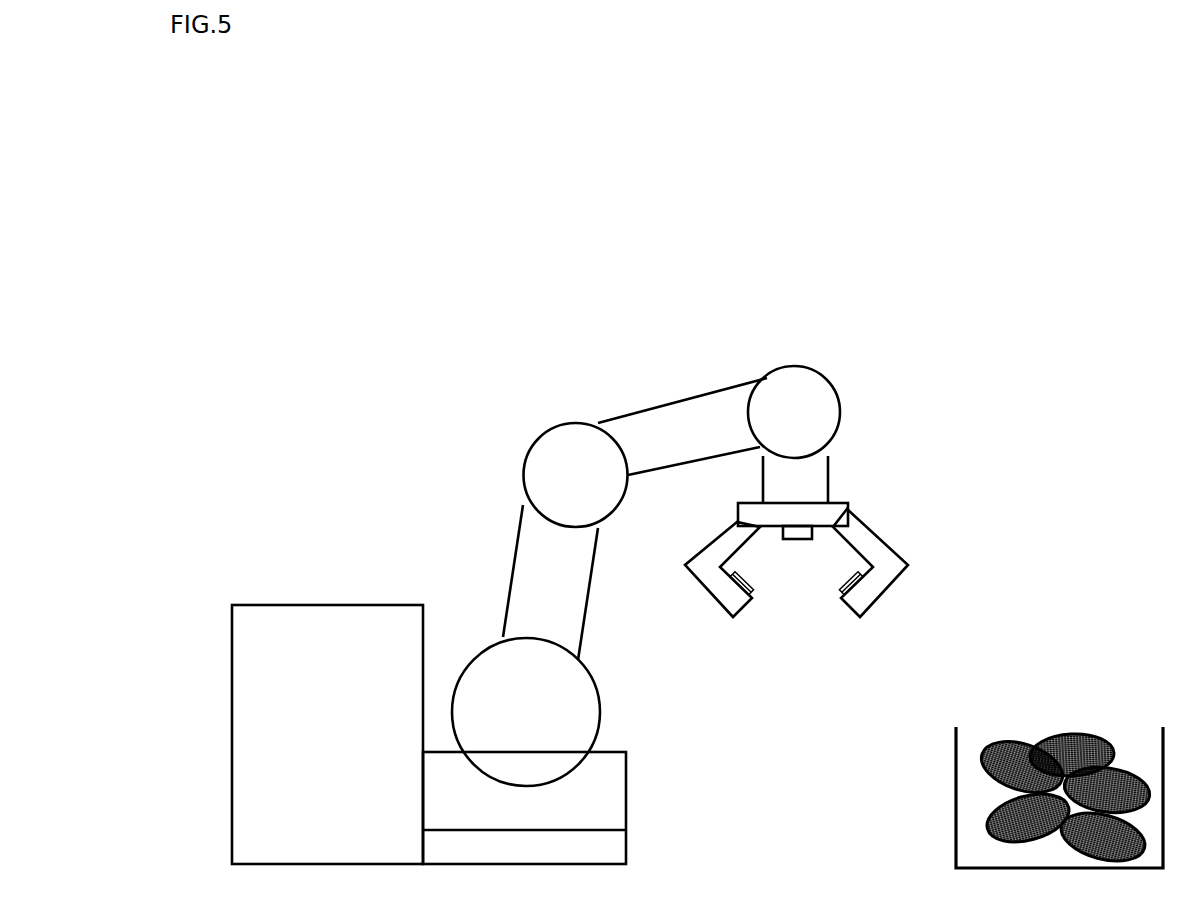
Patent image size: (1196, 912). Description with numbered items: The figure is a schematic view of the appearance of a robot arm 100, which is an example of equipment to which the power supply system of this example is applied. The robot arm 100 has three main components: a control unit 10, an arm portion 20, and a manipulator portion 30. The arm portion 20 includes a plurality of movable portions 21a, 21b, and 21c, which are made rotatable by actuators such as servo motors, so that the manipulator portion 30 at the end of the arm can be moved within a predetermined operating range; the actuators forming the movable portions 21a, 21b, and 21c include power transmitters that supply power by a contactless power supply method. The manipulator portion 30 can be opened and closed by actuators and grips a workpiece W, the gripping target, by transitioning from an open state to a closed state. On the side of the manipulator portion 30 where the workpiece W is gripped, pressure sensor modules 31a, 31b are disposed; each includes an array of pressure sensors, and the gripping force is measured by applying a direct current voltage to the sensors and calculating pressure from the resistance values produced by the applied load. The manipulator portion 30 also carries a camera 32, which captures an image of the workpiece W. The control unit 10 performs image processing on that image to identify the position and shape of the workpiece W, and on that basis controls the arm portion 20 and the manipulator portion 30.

The robot arm 100 is at (303, 160).
The control unit 10 is at (297, 605).
The arm portion 20 is at (482, 362).
The movable portion 21a is at (483, 647).
The movable portion 21b is at (555, 427).
The movable portion 21c is at (793, 365).
The manipulator portion 30 is at (907, 495).
The pressure sensor module 31a is at (742, 585).
The pressure sensor module 31b is at (845, 580).
The camera 32 is at (798, 539).
The workpiece W is at (1070, 728).